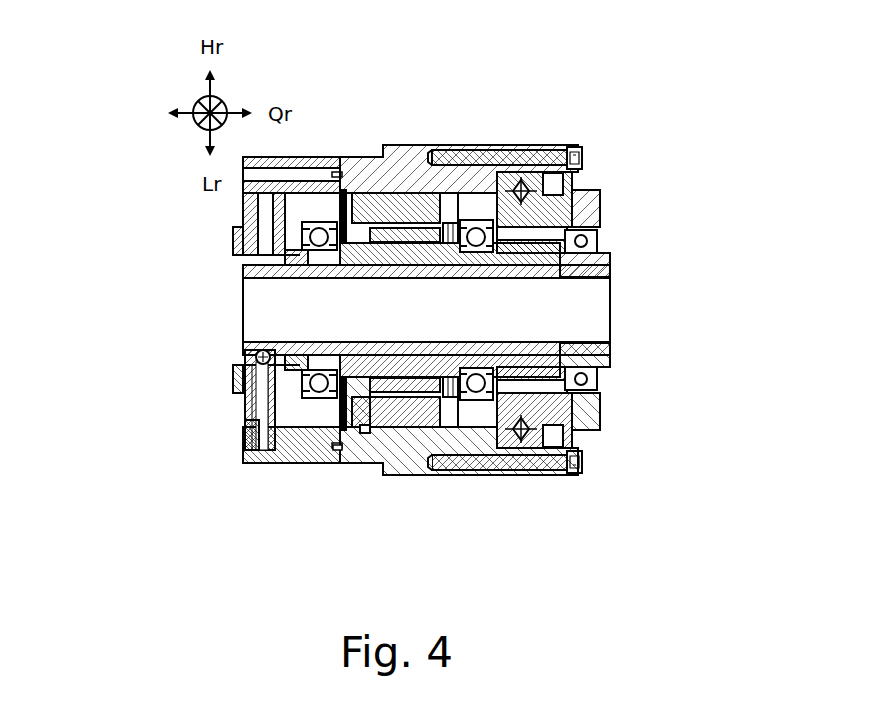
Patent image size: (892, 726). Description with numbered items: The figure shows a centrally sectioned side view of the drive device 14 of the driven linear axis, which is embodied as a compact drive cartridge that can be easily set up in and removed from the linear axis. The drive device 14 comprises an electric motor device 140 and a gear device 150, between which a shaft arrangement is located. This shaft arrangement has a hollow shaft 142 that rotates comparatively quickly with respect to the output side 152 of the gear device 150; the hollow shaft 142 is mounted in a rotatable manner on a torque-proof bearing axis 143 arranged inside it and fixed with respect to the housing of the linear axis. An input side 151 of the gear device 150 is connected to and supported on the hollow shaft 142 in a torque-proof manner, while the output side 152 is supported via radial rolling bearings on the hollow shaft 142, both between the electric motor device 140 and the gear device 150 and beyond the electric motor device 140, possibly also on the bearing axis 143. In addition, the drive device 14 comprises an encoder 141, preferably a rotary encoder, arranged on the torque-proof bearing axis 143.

The drive device 14 is at (346, 72).
The electric motor device 140 is at (359, 440).
The encoder 141 is at (258, 455).
The hollow shaft 142 is at (450, 360).
The bearing axis 143 is at (300, 338).
The gear device 150 is at (510, 433).
The input side 151 is at (548, 238).
The output side 152 is at (450, 182).